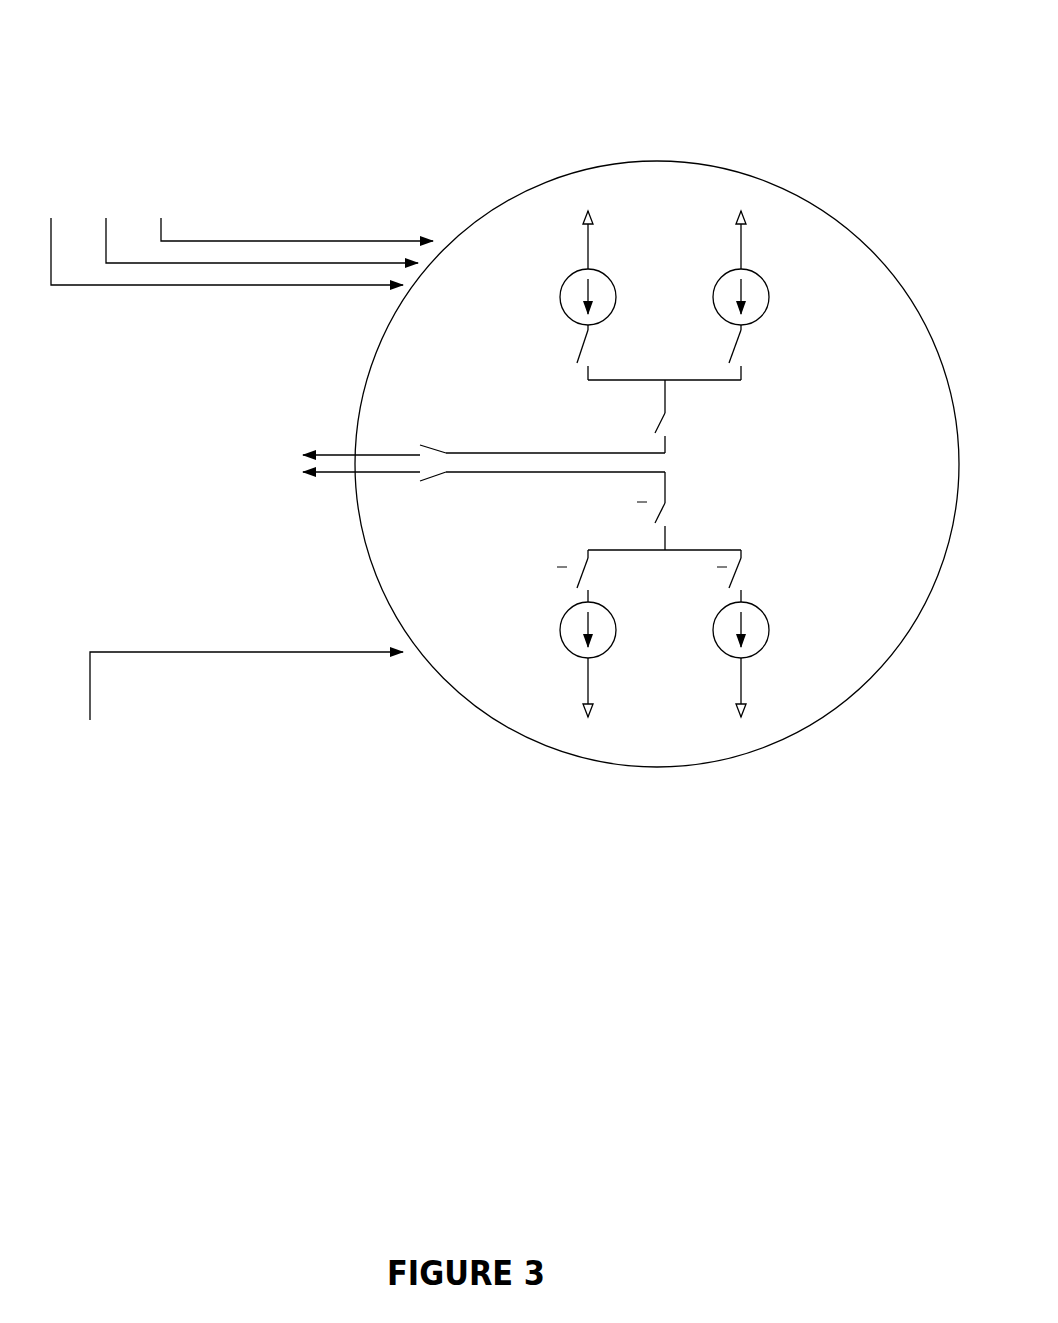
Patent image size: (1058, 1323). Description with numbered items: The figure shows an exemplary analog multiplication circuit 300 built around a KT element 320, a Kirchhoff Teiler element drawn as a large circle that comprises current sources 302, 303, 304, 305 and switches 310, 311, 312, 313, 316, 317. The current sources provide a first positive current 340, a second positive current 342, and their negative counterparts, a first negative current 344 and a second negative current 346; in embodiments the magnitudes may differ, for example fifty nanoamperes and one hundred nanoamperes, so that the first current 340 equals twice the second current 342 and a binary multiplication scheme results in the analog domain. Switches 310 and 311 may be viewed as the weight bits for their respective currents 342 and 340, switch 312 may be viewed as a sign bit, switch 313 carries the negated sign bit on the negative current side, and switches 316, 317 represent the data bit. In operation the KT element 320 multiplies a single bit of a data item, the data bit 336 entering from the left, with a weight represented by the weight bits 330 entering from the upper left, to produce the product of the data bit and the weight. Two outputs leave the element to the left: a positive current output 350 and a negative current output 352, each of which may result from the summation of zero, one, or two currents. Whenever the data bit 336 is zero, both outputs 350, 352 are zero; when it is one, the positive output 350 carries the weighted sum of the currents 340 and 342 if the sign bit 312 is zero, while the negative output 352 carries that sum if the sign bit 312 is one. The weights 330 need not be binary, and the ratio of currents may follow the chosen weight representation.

The circuit 300 is at (484, 26).
The current source 302 is at (770, 297).
The current source 303 is at (560, 297).
The current source 304 is at (770, 630).
The current source 305 is at (560, 630).
The switch w_i,0 310 is at (742, 344).
The switch w_i,1 311 is at (545, 343).
The switch w_i,2 312 is at (666, 423).
The switch 313 is at (667, 509).
The switch x_i,j 316 is at (428, 428).
The switch x_i,j 317 is at (428, 498).
The KT element 320 is at (536, 188).
The weight bit w_i,k 330 is at (103, 160).
The data bit x_i,j 336 is at (90, 780).
The current i1 340 is at (602, 194).
The current i0 342 is at (735, 206).
The current -i1 344 is at (578, 728).
The current -i0 346 is at (730, 728).
The positive current output z_i,p 350 is at (270, 432).
The negative current output z_i,n 352 is at (272, 488).